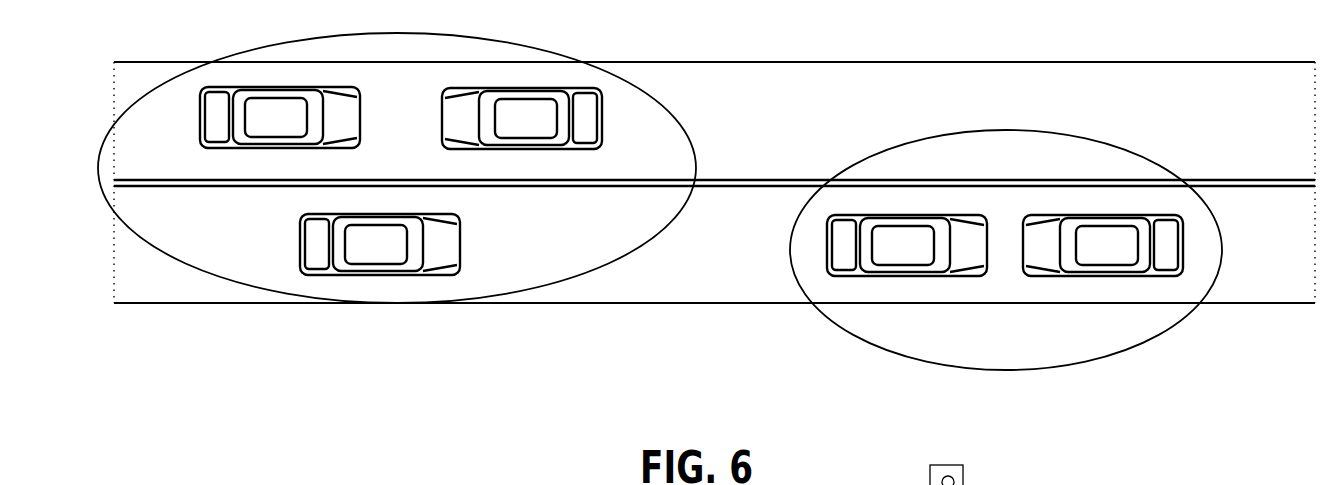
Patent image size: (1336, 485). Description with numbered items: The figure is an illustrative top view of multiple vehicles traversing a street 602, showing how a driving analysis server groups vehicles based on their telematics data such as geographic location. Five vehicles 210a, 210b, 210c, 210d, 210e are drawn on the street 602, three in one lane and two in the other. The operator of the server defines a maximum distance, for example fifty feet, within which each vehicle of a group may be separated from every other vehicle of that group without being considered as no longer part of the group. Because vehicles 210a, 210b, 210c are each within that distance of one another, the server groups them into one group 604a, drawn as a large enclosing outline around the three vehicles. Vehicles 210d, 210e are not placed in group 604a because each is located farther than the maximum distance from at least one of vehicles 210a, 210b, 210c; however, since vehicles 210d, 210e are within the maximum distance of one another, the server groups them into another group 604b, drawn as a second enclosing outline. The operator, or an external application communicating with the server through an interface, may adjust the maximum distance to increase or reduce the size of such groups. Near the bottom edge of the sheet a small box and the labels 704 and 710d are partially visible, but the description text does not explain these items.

The street 602 is at (150, 303).
The group 604a is at (255, 288).
The group 604b is at (850, 334).
The vehicle 210a is at (231, 88).
The vehicle 210b is at (369, 255).
The vehicle 210c is at (590, 100).
The vehicle 210d is at (826, 258).
The vehicle 210e is at (1072, 256).
The vehicle node 704 is at (990, 484).
The vehicle 710d is at (1158, 476).